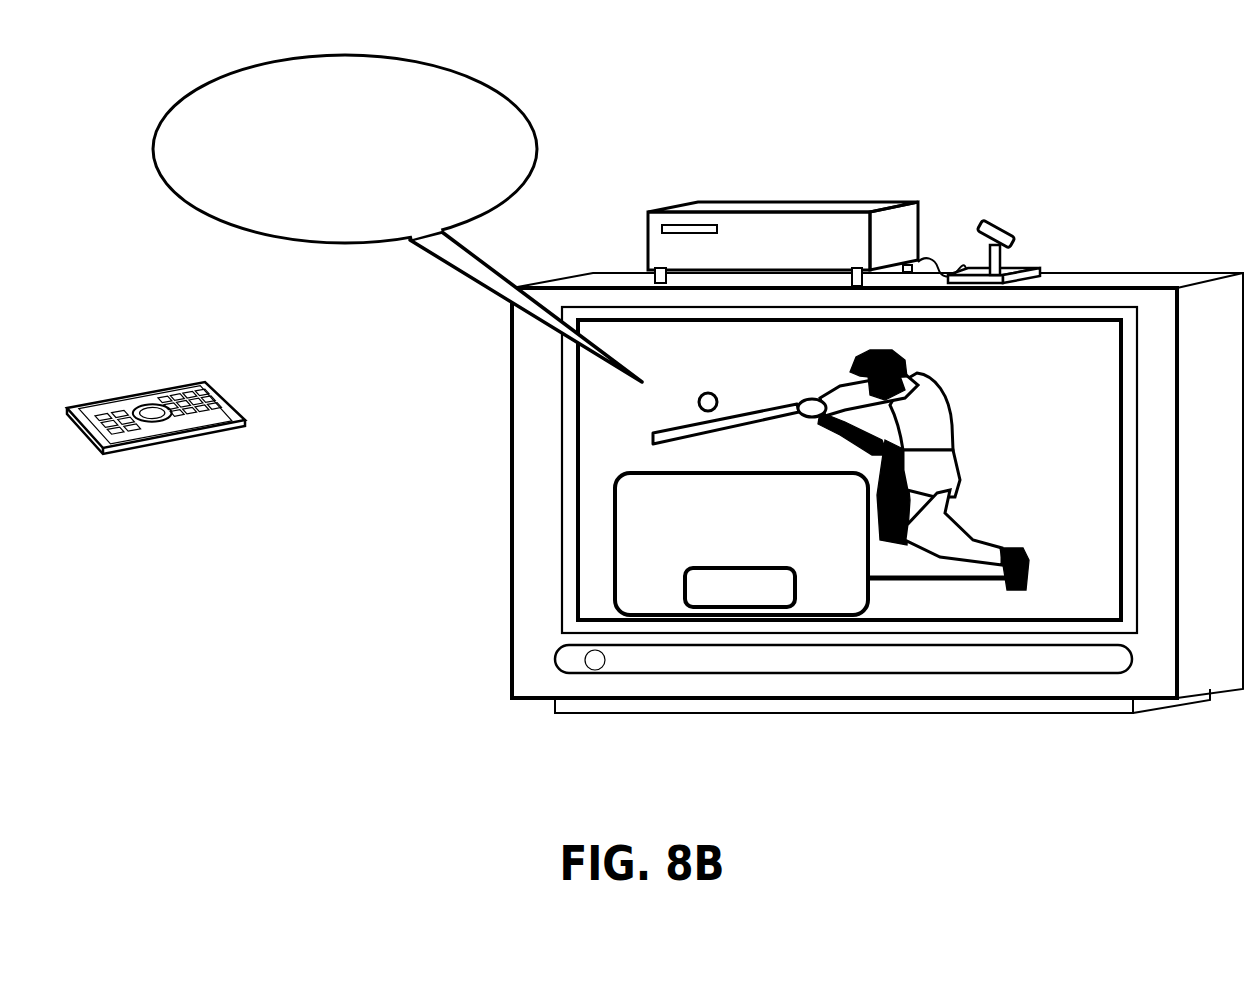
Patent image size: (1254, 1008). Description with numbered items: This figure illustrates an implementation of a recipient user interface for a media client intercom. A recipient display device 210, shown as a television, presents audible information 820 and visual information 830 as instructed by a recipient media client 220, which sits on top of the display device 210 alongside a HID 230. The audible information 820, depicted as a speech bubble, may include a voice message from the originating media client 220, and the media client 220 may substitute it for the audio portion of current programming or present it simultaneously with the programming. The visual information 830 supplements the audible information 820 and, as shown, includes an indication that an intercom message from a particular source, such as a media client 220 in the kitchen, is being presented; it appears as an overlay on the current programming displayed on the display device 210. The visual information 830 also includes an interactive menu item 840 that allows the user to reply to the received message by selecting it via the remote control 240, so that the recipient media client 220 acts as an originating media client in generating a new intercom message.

The display device 210 is at (1142, 282).
The media client 220 is at (685, 208).
The HID 230 is at (1002, 236).
The remote control 240 is at (175, 384).
The audible information 820 is at (517, 108).
The visual information 830 is at (600, 484).
The interactive menu item 840 is at (670, 575).